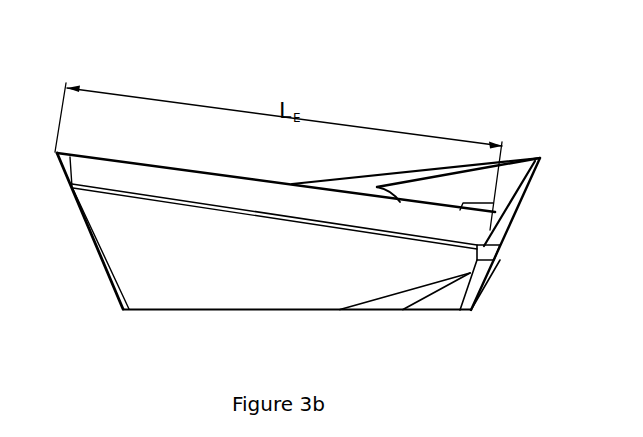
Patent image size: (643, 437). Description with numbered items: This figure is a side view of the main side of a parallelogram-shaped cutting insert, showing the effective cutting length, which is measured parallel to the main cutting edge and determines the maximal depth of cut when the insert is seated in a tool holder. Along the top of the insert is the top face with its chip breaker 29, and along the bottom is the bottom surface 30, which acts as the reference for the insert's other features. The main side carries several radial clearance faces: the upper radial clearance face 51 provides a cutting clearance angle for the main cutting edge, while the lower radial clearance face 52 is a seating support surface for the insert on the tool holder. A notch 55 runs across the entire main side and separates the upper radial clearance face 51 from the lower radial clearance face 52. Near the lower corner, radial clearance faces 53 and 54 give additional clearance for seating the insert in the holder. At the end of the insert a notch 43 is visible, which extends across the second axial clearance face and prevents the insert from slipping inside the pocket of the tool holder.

The chip breaker 29 is at (450, 192).
The bottom surface 30 is at (295, 312).
The notch 43 is at (490, 252).
The upper radial clearance face 51 is at (183, 185).
The lower radial clearance face 52 is at (188, 267).
The radial clearance face 53 is at (400, 300).
The radial clearance face 54 is at (443, 302).
The notch 55 is at (122, 197).